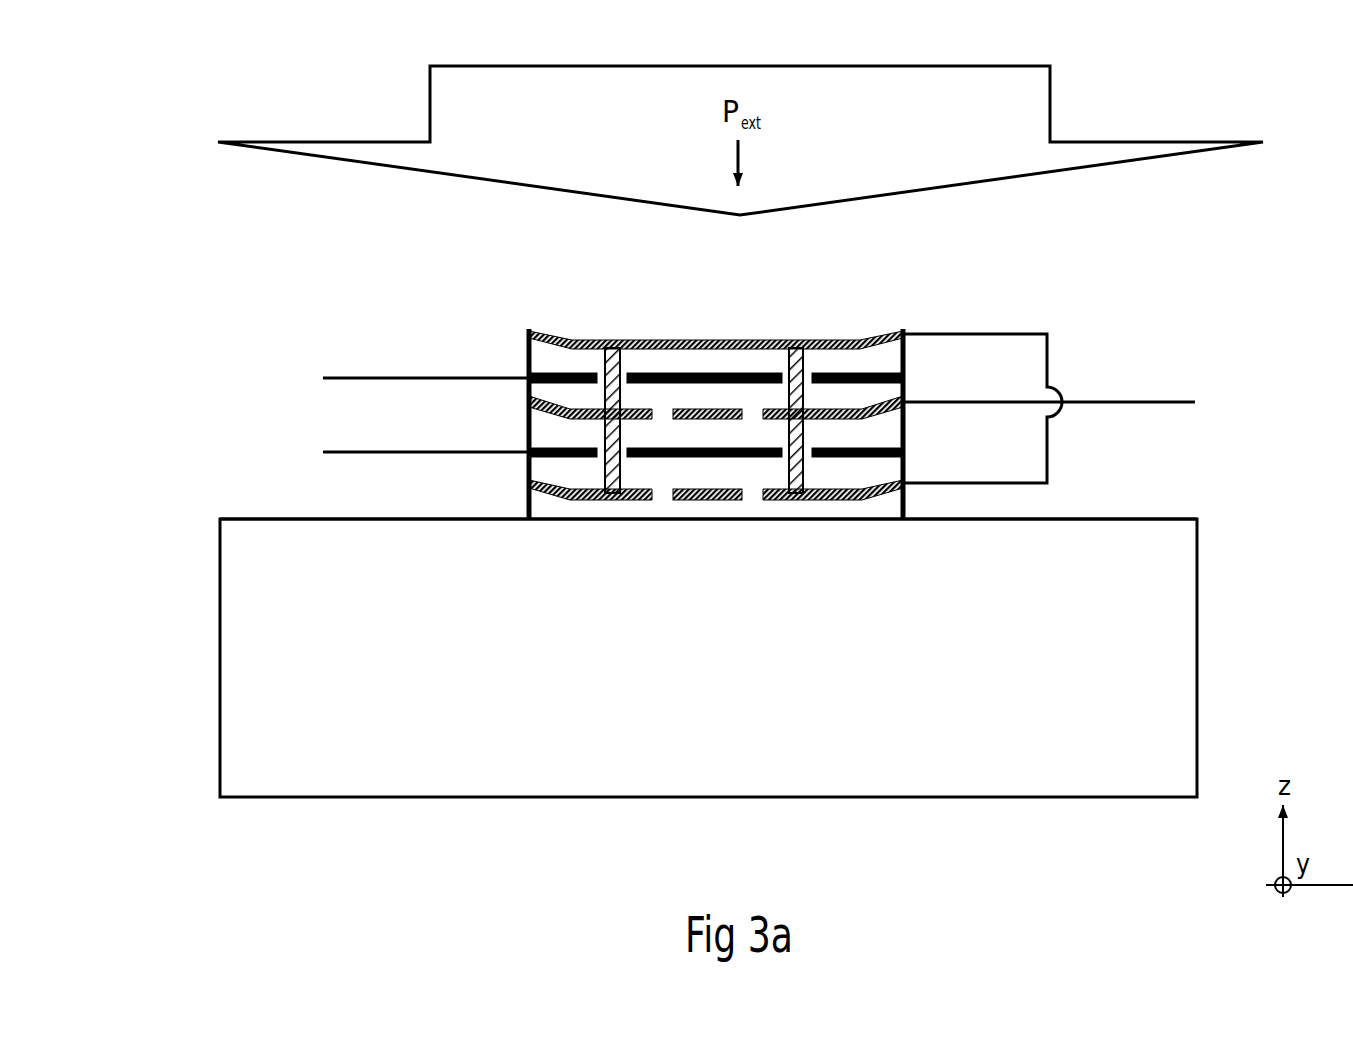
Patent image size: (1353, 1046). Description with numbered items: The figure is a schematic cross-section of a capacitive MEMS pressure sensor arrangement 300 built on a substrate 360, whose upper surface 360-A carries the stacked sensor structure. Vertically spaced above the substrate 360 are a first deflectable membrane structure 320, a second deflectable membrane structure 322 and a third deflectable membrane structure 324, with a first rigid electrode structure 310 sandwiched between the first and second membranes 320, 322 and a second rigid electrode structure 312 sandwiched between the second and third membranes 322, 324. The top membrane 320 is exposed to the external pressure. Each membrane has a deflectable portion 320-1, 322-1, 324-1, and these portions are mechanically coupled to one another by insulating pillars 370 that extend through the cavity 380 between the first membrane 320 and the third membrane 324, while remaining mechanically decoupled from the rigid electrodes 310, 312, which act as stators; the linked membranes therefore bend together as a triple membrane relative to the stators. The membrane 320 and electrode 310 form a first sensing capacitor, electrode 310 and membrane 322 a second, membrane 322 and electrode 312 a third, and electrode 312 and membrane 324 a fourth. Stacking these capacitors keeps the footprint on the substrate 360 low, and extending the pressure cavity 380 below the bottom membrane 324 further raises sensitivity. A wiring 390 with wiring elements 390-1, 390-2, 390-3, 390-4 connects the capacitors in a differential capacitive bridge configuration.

The capacitive MEMS pressure sensor arrangement 300 is at (66, 70).
The first rigid electrode structure 310 is at (526, 372).
The second rigid electrode structure 312 is at (526, 447).
The first deflectable membrane structure 320 is at (905, 327).
The deflectable portion of the first deflectable membrane structure 320-1 is at (648, 337).
The second deflectable membrane structure 322 is at (908, 396).
The deflectable portion of the second deflectable membrane structure 322-1 is at (707, 406).
The third deflectable membrane structure 324 is at (908, 480).
The deflectable portion of the third deflectable membrane structure 324-1 is at (853, 503).
The substrate 360 is at (1198, 657).
The substrate top surface 360-A is at (1146, 515).
The insulating pillars 370 is at (622, 467).
The cavity 380 is at (848, 357).
The wiring 390 is at (98, 765).
The wiring element 390-1 is at (398, 374).
The wiring element 390-2 is at (1122, 399).
The wiring element 390-3 is at (1023, 332).
The wiring element 390-4 is at (400, 457).